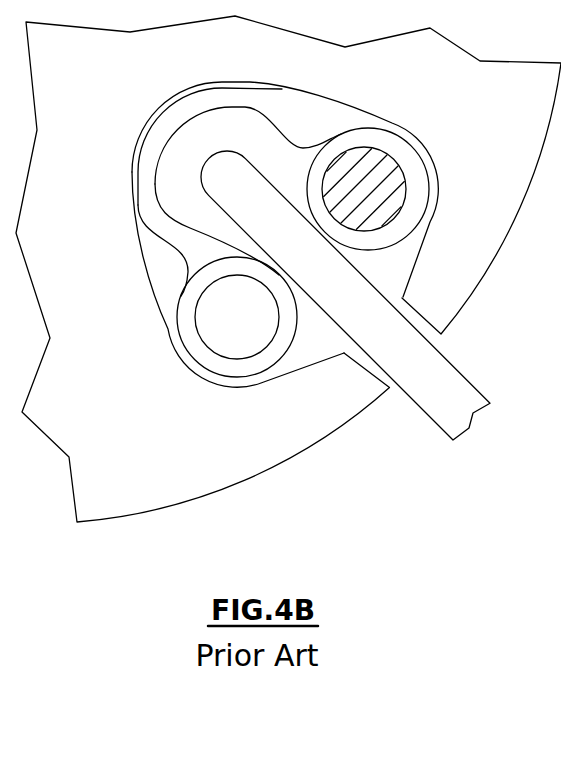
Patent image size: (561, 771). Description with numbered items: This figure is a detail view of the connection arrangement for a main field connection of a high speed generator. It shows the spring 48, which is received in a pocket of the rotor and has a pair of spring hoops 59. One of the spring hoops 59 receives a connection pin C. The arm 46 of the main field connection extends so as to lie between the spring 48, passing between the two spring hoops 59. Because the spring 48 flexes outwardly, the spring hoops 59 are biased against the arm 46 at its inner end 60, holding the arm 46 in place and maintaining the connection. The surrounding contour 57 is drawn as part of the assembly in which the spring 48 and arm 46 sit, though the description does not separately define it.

The arm 46 is at (445, 385).
The spring 48 is at (205, 255).
The outer rim flange 57 is at (137, 229).
The spring hoops 59 is at (375, 140).
The inner end 60 is at (245, 177).
The connection pin C is at (375, 197).